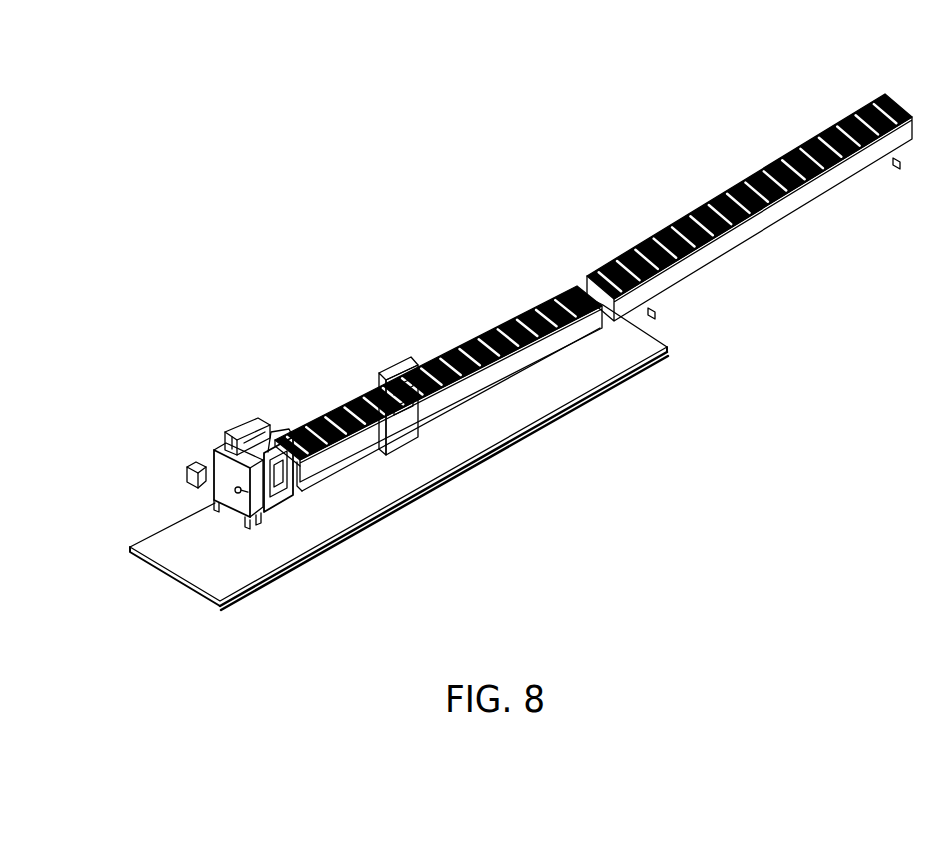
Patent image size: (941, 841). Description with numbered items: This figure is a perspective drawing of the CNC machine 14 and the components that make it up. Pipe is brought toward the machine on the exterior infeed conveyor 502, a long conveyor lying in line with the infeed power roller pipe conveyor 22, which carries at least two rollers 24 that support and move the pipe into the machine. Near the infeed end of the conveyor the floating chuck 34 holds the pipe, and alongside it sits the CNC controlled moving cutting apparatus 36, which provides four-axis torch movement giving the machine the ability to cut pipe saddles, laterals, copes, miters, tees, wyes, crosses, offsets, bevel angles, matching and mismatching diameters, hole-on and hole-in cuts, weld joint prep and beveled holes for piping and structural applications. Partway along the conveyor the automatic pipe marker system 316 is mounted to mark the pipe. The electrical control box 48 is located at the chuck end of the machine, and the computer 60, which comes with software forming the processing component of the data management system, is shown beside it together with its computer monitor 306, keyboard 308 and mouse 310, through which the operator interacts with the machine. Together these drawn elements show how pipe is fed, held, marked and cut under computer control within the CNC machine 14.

The assembly system 14 is at (320, 222).
The infeed power roller pipe conveyor 22 is at (480, 392).
The rollers 24 is at (448, 349).
The floating chuck 34 is at (237, 426).
The CNC controlled moving cutting apparatus 36 is at (440, 384).
The electrical control box 48 is at (214, 450).
The computer 60 is at (190, 463).
The computer monitor 306 is at (332, 457).
The keyboard 308 is at (300, 474).
The mouse 310 is at (303, 466).
The automatic pipe marker system 316 is at (379, 372).
The exterior infeed conveyor 502 is at (724, 258).